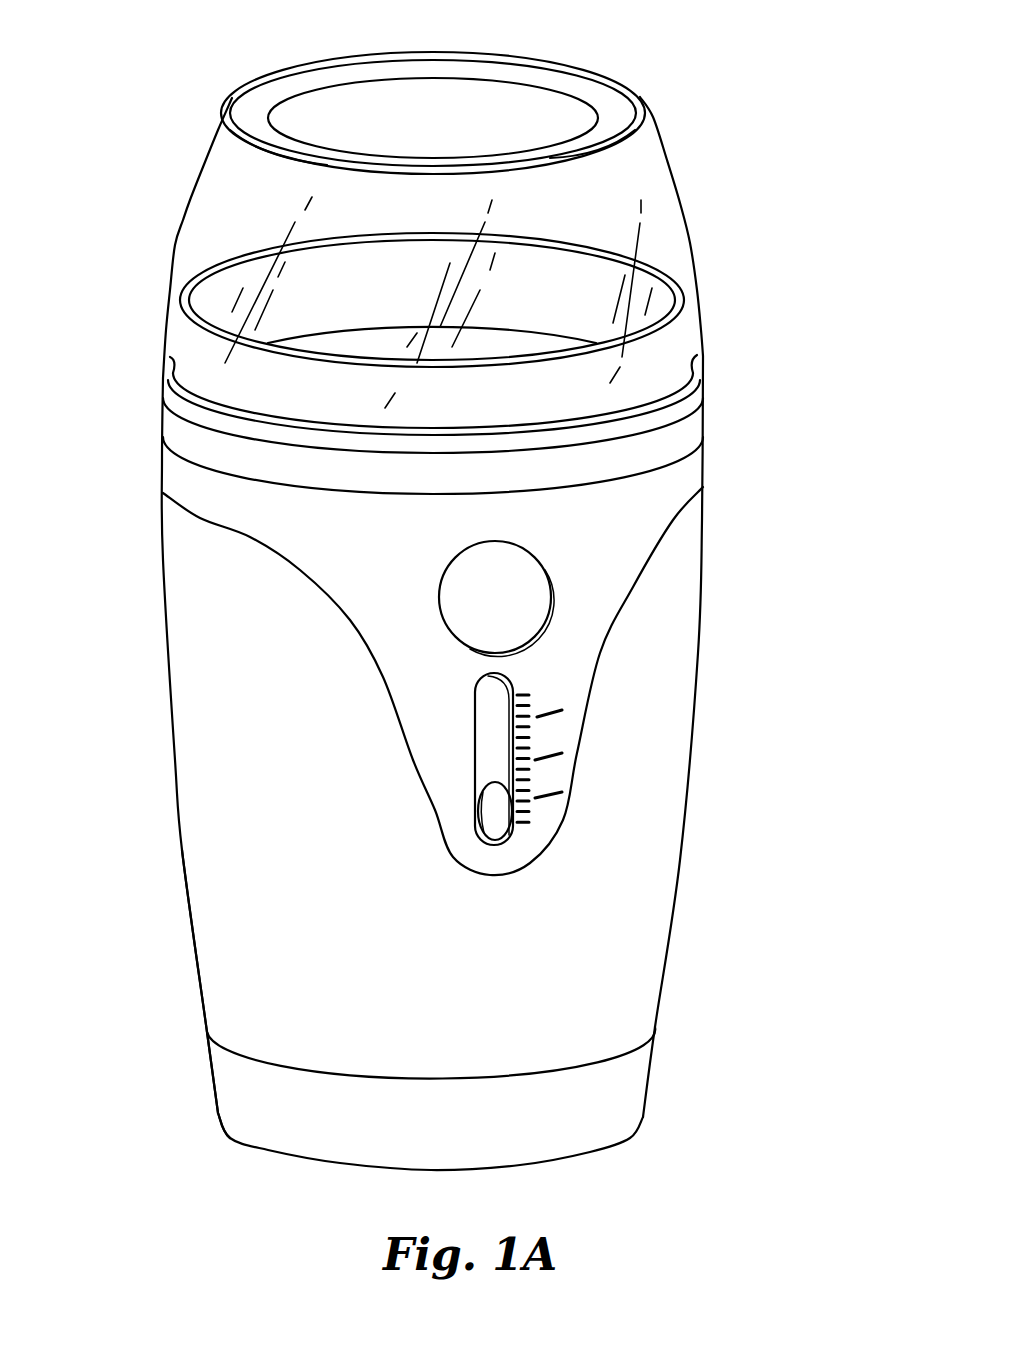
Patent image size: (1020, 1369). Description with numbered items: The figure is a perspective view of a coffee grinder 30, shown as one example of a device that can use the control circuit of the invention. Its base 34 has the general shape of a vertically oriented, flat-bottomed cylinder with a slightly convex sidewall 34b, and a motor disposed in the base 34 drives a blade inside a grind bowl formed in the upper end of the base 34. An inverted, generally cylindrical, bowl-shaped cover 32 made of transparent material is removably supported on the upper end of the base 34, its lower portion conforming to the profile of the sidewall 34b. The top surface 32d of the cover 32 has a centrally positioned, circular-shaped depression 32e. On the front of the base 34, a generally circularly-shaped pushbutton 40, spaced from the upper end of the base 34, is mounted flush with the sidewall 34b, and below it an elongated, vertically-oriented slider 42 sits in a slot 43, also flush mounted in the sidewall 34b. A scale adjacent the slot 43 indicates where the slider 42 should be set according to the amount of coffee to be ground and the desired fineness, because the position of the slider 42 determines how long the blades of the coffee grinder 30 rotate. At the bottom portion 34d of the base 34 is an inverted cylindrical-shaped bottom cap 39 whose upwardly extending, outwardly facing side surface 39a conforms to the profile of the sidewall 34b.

The coffee grinder 30 is at (475, 585).
The cover 32 is at (474, 204).
The top surface 32d is at (290, 88).
The circular-shaped depression 32e is at (497, 115).
The base 34 is at (703, 553).
The sidewall 34b is at (346, 784).
The bottom portion 34d is at (233, 1115).
The bottom cap 39 is at (497, 1098).
The outwardly facing side surface 39a is at (469, 1138).
The pushbutton 40 is at (513, 611).
The slider 42 is at (494, 806).
The slot 43 is at (505, 686).